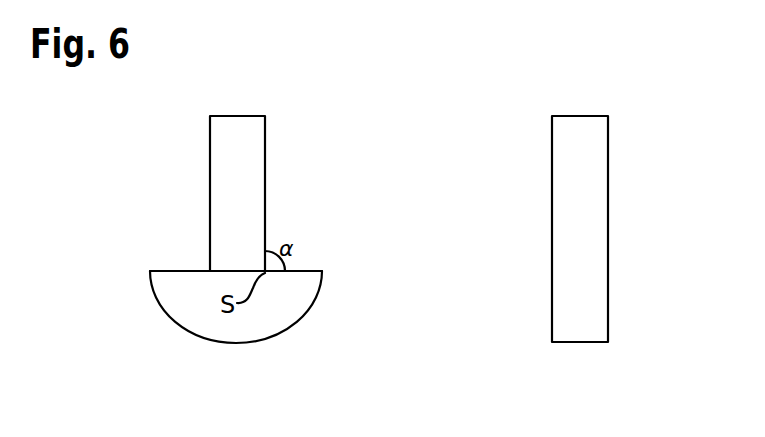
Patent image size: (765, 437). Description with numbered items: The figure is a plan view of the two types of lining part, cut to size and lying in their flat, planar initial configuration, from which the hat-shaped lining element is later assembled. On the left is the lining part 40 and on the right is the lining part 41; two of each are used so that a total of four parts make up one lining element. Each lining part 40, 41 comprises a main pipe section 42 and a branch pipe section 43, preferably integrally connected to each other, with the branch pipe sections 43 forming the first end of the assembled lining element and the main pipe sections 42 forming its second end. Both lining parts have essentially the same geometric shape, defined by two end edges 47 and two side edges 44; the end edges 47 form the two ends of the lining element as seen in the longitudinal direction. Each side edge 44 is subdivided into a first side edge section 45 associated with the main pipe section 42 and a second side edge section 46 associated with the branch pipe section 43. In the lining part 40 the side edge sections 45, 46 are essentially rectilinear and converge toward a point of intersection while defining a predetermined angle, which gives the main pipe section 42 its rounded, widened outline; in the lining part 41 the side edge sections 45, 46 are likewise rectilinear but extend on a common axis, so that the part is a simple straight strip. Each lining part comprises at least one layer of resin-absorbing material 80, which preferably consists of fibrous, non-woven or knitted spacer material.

The lining part 40 is at (298, 122).
The lining part 41 is at (625, 128).
The main pipe section 42 is at (287, 308).
The branch pipe section 43 is at (257, 159).
The side edges 44 is at (120, 192).
The first side edge section 45 is at (178, 271).
The second side edge section 46 is at (210, 218).
The end edges 47 is at (235, 116).
The resin-absorbing layer 80 is at (228, 178).